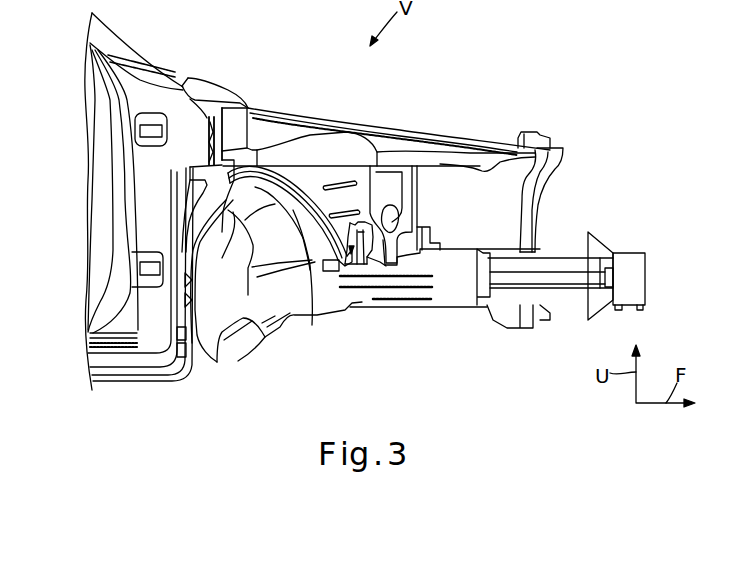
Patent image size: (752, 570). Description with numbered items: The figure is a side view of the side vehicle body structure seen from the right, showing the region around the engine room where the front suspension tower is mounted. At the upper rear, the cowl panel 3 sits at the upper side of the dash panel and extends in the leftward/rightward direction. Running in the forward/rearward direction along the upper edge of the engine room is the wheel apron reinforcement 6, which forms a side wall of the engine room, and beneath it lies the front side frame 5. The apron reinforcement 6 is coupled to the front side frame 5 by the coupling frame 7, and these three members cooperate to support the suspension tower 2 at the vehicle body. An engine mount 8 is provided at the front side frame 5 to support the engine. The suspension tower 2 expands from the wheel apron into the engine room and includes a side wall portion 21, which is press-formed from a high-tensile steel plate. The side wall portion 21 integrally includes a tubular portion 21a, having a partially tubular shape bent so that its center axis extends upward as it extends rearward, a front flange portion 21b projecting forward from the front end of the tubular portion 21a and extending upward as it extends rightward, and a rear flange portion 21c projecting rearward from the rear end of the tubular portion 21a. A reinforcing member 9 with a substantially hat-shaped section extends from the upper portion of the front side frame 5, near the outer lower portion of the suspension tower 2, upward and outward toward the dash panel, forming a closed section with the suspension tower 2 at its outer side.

The suspension tower 2 is at (347, 177).
The cowl panel 3 is at (212, 80).
The front side frame 5 is at (452, 297).
The wheel apron reinforcement 6 is at (322, 121).
The coupling frame 7 is at (415, 193).
The engine mount 8 is at (433, 232).
The reinforcing member 9 is at (306, 300).
The side wall portion 21 is at (351, 256).
The tubular portion 21a is at (364, 250).
The front flange portion 21b is at (383, 267).
The rear flange portion 21c is at (274, 247).